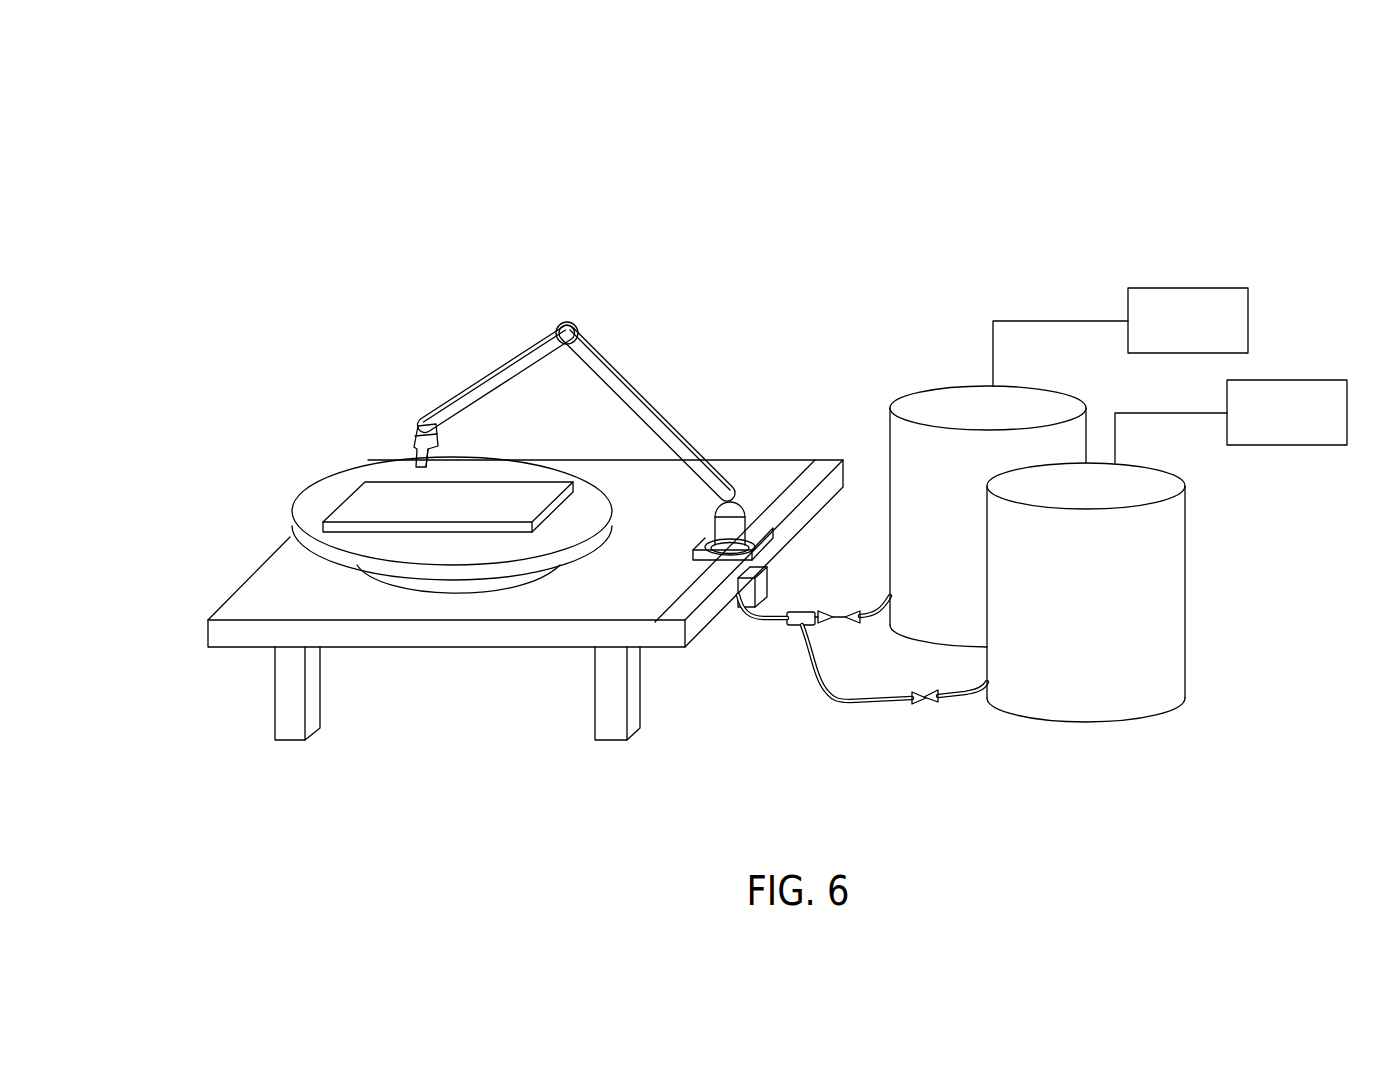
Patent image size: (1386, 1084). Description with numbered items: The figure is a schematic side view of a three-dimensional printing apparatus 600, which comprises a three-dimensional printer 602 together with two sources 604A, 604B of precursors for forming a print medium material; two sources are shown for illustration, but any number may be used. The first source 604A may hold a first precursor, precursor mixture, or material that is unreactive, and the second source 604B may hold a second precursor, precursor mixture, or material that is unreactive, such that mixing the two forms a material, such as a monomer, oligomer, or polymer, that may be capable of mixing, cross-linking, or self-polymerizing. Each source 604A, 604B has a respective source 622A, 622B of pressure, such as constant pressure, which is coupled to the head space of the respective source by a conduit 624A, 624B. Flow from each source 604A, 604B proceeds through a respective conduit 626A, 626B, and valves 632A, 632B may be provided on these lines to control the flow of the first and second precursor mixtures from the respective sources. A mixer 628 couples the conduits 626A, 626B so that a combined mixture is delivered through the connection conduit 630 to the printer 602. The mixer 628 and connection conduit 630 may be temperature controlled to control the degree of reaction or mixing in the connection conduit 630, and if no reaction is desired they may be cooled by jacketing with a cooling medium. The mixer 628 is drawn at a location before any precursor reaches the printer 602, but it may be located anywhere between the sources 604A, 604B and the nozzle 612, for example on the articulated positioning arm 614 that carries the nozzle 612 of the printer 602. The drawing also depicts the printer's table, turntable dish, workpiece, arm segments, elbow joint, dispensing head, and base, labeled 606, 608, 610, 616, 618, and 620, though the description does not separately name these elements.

The 3D printing apparatus 600 is at (652, 285).
The 3D printer 602 is at (293, 407).
The first source 604A is at (922, 388).
The second source 604B is at (1185, 662).
The turntable dish 606 is at (290, 515).
The food item / substrate 608 is at (417, 498).
The upper arm segment 610 is at (482, 375).
The nozzle 612 is at (440, 450).
The articulated positioning arm 614 is at (640, 385).
The dispensing head 616 is at (423, 423).
The elbow joint 618 is at (560, 323).
The arm base 620 is at (767, 520).
The source of pressure 622A is at (1163, 332).
The source of pressure 622B is at (1262, 424).
The conduit 624A is at (1047, 321).
The conduit 624B is at (1187, 413).
The conduit 626A is at (820, 608).
The conduit 626B is at (853, 710).
The mixer 628 is at (785, 624).
The connection conduit 630 is at (738, 607).
The valve 632A is at (840, 620).
The valve 632B is at (920, 705).